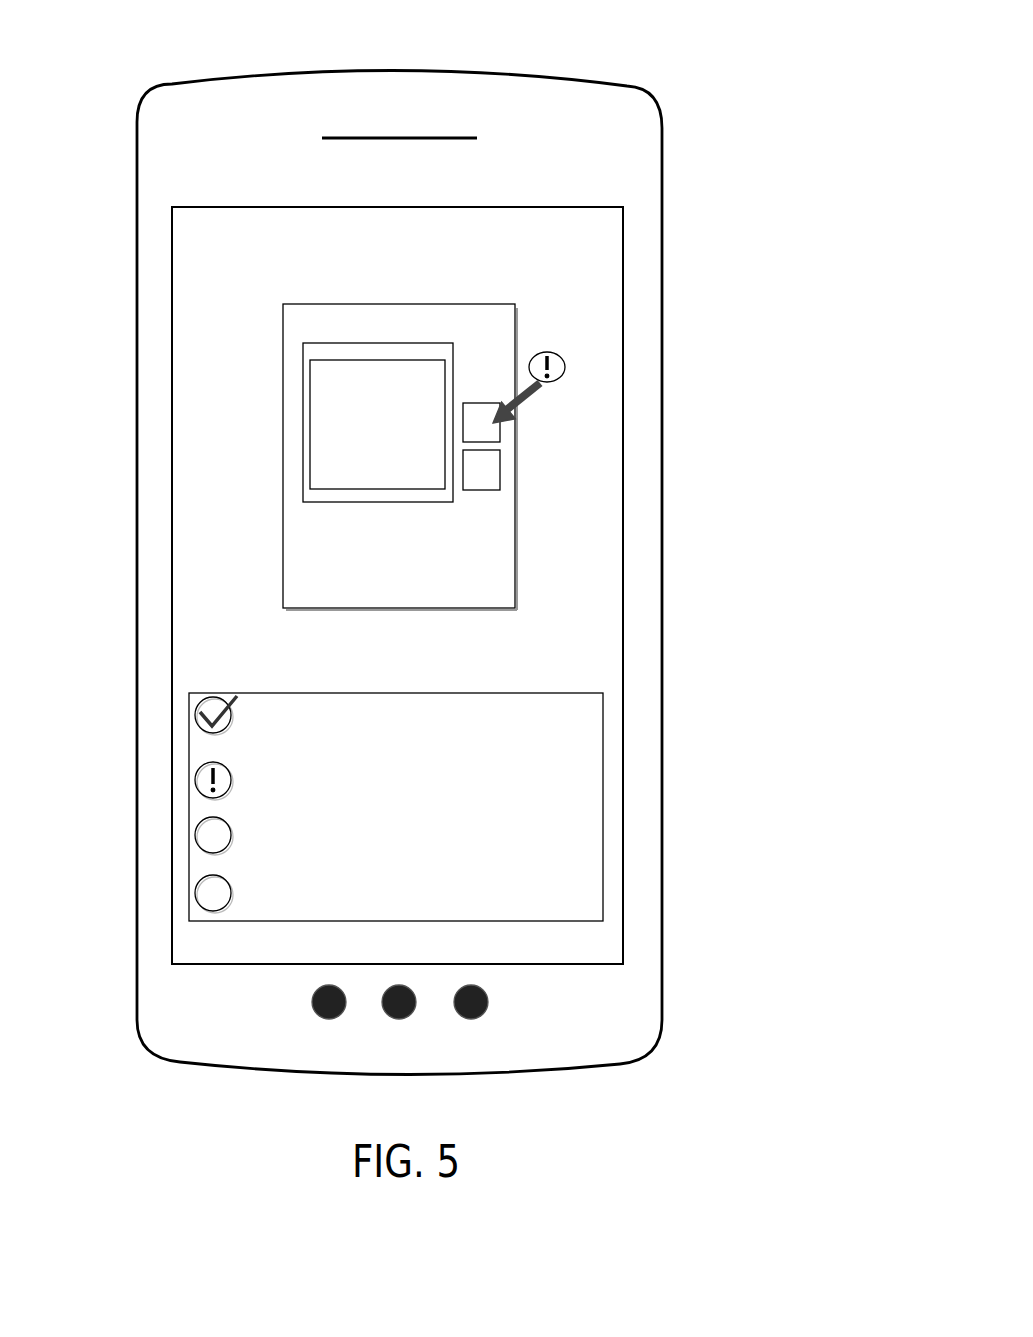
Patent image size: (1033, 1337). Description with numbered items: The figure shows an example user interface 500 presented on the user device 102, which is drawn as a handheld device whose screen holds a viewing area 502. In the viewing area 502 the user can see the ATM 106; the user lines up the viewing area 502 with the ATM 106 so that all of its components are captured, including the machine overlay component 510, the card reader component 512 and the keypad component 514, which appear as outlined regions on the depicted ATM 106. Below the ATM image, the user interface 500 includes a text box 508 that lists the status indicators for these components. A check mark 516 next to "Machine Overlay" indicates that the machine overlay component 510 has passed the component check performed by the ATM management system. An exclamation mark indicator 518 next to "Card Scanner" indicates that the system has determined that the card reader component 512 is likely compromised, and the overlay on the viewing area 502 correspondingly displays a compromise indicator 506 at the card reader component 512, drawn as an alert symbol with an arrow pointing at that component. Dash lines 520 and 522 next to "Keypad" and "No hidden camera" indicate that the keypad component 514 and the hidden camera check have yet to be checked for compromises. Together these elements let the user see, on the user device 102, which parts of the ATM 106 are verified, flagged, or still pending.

The user interface 500 is at (448, 569).
The user device 102 is at (160, 127).
The viewing area 502 is at (425, 585).
The ATM 106 is at (394, 457).
The compromise indicator 506 is at (530, 390).
The text box 508 is at (425, 807).
The machine overlay component 510 is at (332, 442).
The card reader component 512 is at (492, 423).
The keypad component 514 is at (488, 463).
The check mark 516 is at (195, 713).
The exclamation mark indicator 518 is at (195, 778).
The dash line 520 is at (195, 830).
The dash line 522 is at (195, 885).